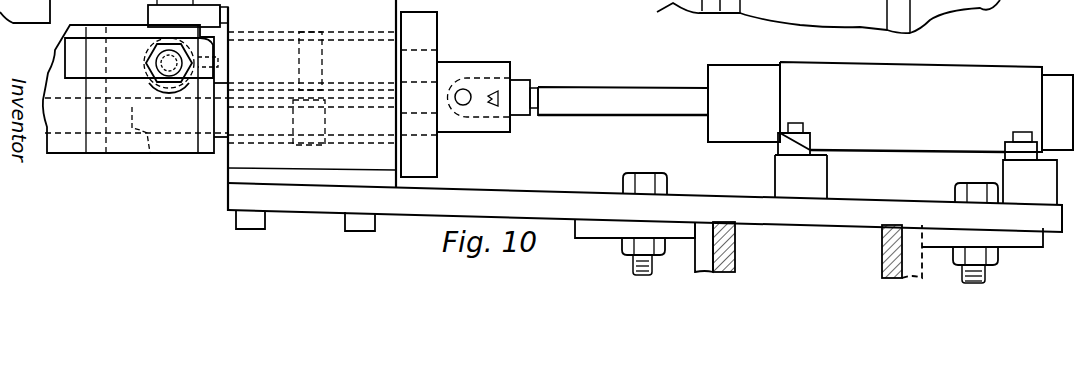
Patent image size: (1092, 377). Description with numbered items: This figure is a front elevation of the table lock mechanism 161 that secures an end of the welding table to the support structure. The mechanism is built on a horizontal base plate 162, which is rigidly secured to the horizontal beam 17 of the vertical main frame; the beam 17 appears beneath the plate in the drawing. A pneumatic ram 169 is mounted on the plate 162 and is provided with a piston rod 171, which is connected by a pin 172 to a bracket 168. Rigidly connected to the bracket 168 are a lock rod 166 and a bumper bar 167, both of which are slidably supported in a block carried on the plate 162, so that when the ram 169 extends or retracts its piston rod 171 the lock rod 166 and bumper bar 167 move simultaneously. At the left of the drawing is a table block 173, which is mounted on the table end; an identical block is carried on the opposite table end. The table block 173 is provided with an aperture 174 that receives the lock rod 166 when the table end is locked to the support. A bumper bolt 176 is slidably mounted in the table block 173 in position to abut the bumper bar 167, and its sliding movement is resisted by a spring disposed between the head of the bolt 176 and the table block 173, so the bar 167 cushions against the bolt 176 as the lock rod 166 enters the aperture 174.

The horizontal beam 17 is at (762, 12).
The table lock mechanism 161 is at (606, 156).
The horizontal base plate 162 is at (488, 192).
The lock rod 166 is at (150, 156).
The bumper bar 167 is at (118, 42).
The bracket 168 is at (437, 32).
The pneumatic ram 169 is at (960, 58).
The piston rod 171 is at (618, 90).
The pin 172 is at (463, 90).
The table block 173 is at (122, 153).
The aperture 174 is at (58, 134).
The bumper bolt 176 is at (153, 66).